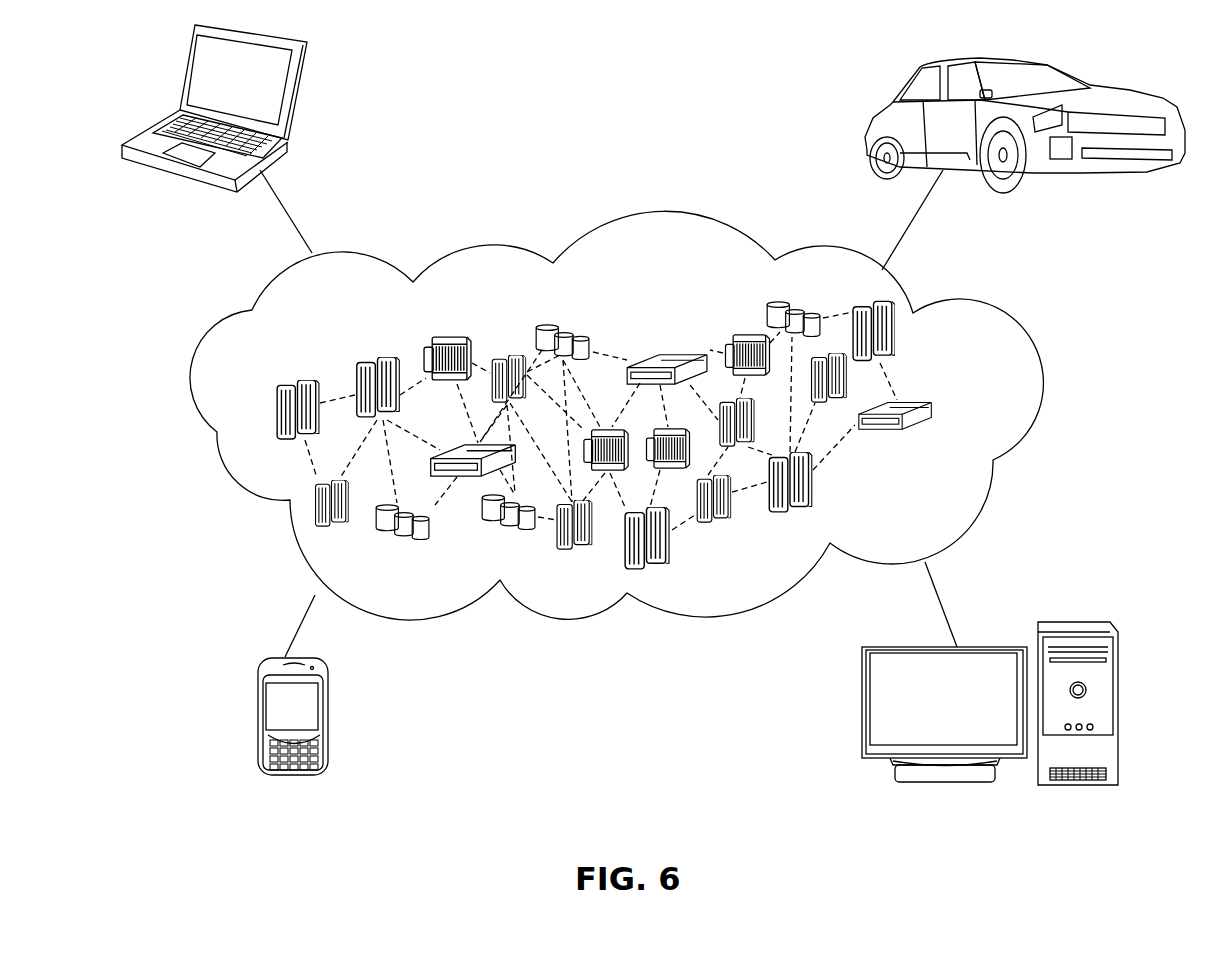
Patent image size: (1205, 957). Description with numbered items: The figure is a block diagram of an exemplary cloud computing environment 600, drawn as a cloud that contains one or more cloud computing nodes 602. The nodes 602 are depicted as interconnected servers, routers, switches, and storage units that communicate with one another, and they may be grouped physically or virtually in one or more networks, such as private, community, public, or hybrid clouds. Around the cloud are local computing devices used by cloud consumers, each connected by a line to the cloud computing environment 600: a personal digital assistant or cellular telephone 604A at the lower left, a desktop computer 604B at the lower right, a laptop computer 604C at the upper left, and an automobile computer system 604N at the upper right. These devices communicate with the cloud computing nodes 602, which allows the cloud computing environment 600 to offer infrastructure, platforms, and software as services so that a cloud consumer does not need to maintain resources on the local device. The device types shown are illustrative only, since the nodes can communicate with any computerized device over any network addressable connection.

The cloud computing environment 600 is at (1003, 322).
The cloud computing nodes 602 is at (976, 411).
The personal digital assistant or cellular telephone 604A is at (258, 722).
The desktop computer 604B is at (1082, 622).
The laptop computer 604C is at (300, 97).
The automobile computer system 604N is at (875, 107).